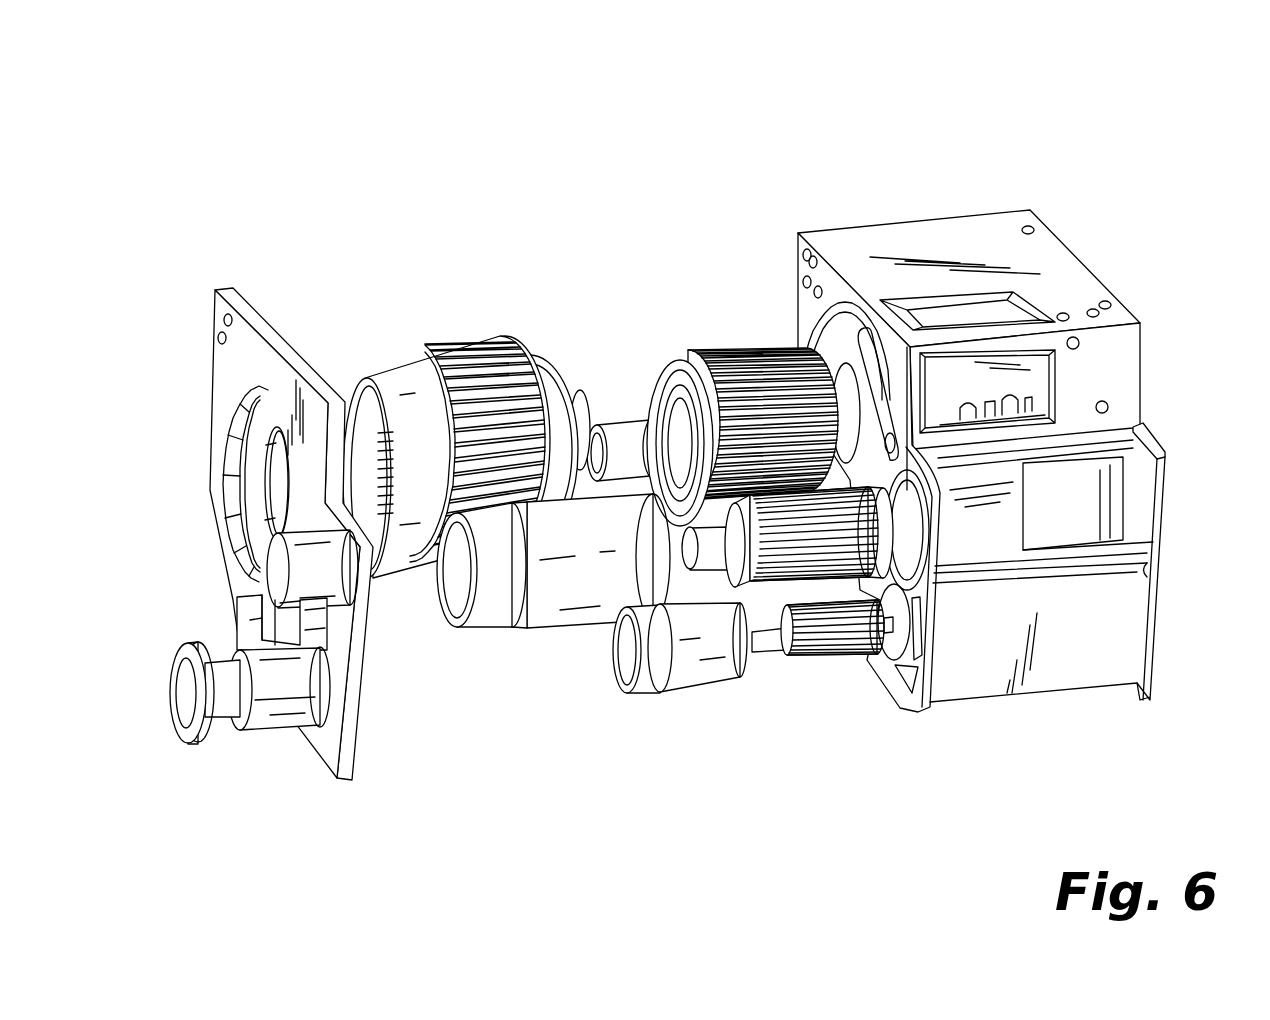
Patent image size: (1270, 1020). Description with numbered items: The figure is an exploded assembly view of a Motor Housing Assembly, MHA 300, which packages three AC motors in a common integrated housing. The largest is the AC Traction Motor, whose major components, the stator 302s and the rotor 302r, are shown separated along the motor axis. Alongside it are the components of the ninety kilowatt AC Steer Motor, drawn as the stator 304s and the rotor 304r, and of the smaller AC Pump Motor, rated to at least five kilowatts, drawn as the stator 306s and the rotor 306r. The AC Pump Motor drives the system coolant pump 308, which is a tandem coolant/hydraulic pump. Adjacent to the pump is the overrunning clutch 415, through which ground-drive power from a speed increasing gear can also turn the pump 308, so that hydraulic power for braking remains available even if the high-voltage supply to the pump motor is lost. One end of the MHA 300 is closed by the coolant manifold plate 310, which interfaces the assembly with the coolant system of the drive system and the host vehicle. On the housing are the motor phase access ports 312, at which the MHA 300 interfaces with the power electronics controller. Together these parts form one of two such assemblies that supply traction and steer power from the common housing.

The Motor Housing Assembly (MHA) 300 is at (290, 162).
The stator 302s is at (452, 333).
The rotor 302r is at (724, 348).
The stator 304s is at (558, 598).
The rotor 304r is at (775, 592).
The stator 306s is at (687, 668).
The rotor 306r is at (823, 580).
The system coolant pump 308 is at (258, 736).
The coolant manifold plate 310 is at (226, 372).
The motor phase access ports 312 is at (975, 357).
The overrunning clutch 415 is at (187, 746).